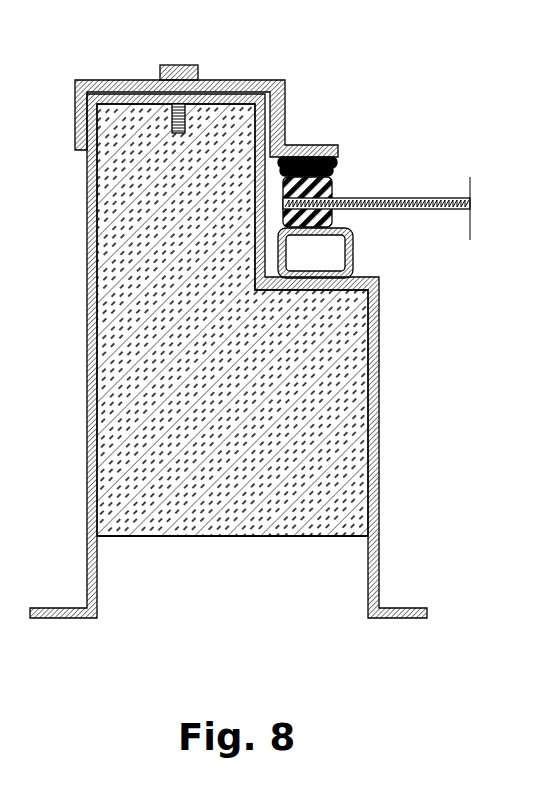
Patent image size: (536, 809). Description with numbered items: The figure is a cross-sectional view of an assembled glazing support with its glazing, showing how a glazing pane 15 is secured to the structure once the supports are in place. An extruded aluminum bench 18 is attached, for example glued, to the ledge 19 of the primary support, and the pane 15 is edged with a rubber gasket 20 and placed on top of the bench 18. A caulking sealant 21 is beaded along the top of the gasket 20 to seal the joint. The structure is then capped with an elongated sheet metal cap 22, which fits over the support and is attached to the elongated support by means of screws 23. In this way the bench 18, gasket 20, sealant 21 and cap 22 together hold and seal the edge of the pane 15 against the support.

The glazing pane 15 is at (440, 198).
The extruded aluminum bench 18 is at (353, 258).
The ledge 19 is at (379, 278).
The rubber gasket 20 is at (333, 222).
The caulking sealant 21 is at (338, 163).
The sheet metal cap 22 is at (110, 92).
The screw 23 is at (177, 65).